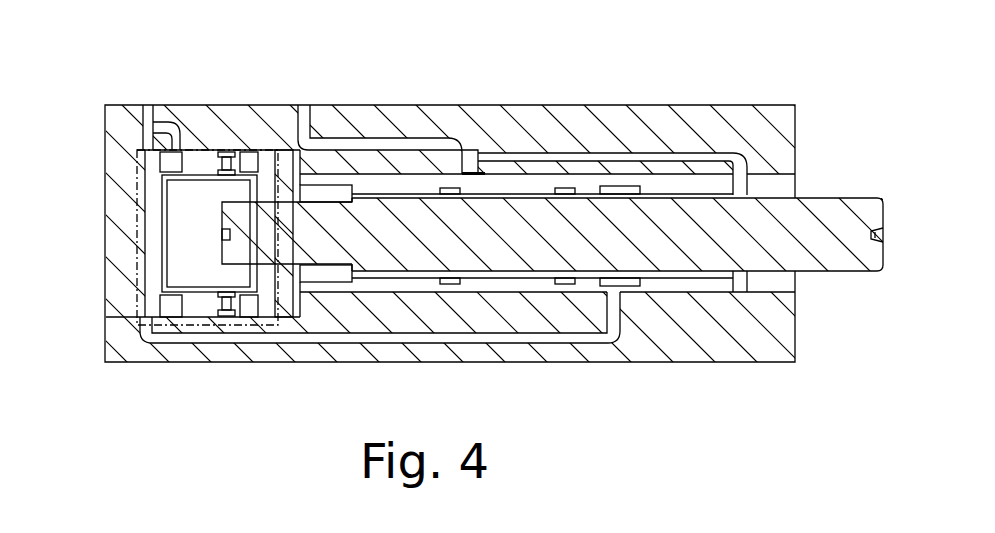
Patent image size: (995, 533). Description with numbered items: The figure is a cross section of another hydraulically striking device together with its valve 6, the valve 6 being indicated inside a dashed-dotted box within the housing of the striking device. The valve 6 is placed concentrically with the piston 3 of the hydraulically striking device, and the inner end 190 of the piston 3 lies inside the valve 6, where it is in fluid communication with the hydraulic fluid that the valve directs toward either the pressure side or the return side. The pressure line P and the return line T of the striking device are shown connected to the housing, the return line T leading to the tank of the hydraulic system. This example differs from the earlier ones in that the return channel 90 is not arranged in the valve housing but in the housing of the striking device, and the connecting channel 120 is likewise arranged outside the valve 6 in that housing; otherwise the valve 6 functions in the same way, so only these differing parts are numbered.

The valve 6 is at (137, 228).
The pressure line P is at (148, 106).
The connecting channel 120 is at (227, 138).
The return channel 90 is at (290, 117).
The return line T is at (307, 107).
The piston 3 is at (863, 196).
The inner end 190 is at (225, 252).